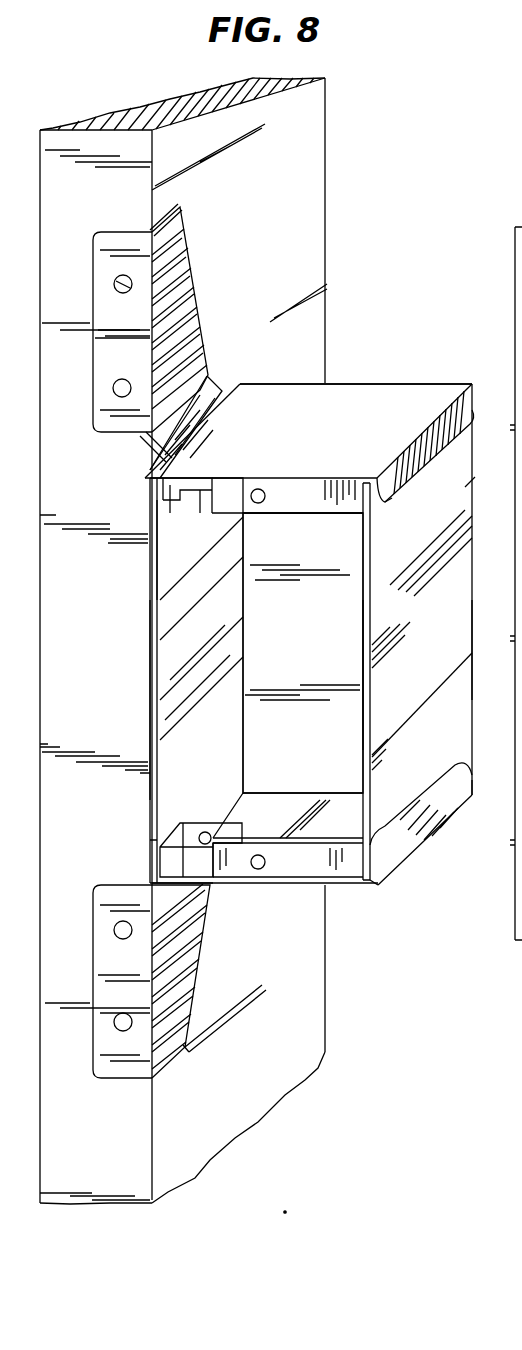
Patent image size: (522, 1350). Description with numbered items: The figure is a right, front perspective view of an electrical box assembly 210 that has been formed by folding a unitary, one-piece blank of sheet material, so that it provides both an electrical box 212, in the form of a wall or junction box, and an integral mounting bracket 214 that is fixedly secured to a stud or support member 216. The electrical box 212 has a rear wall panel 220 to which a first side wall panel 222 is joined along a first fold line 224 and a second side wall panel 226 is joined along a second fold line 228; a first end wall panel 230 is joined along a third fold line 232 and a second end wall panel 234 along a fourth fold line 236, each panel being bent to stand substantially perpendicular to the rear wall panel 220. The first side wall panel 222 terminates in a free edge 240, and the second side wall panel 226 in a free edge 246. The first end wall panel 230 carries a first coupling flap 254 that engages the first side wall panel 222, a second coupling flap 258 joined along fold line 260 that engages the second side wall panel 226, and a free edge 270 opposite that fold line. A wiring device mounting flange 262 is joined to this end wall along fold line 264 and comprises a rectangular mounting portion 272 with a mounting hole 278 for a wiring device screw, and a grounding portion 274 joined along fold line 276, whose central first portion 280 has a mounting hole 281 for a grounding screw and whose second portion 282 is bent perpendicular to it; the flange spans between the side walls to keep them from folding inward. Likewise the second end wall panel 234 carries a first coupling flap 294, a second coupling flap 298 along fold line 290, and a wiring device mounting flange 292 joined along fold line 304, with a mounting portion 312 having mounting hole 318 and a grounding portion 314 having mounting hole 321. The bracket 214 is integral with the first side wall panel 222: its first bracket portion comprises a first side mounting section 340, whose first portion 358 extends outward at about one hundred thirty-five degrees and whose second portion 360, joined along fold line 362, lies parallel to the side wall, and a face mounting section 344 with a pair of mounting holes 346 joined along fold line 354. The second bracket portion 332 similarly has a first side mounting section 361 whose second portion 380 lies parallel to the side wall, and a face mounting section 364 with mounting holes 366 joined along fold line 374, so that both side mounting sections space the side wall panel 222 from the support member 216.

The electrical box assembly 210 is at (392, 300).
The electrical box 212 is at (420, 372).
The mounting bracket 214 is at (250, 255).
The support member 216 is at (312, 1068).
The rear wall panel 220 is at (318, 692).
The first side wall panel 222 is at (146, 652).
The first fold line 224 is at (246, 658).
The second side wall panel 226 is at (355, 712).
The second fold line 228 is at (472, 632).
The first end wall panel 230 is at (320, 426).
The third fold line 232 is at (339, 384).
The second end wall panel 234 is at (297, 793).
The fourth fold line 236 is at (347, 793).
The free edge 240 is at (150, 615).
The free edge 246 is at (372, 600).
The first coupling flap 254 is at (150, 490).
The second coupling flap 258 is at (418, 485).
The fold line 260 is at (440, 400).
The wiring device mounting flange 262 is at (348, 495).
The fold line 264 is at (325, 478).
The free edge 270 is at (236, 386).
The mounting portion 272 is at (300, 520).
The grounding portion 274 is at (158, 545).
The fold line 276 is at (228, 498).
The mounting hole 278 is at (264, 490).
The first portion 280 is at (205, 495).
The mounting hole 281 is at (195, 495).
The second portion 282 is at (178, 485).
The fold line 290 is at (433, 833).
The wiring device mounting flange 292 is at (370, 892).
The first coupling flap 294 is at (150, 860).
The second coupling flap 298 is at (427, 793).
The fold line 304 is at (320, 883).
The mounting portion 312 is at (300, 833).
The grounding portion 314 is at (245, 818).
The mounting hole 318 is at (262, 870).
The mounting hole 321 is at (208, 833).
The second bracket portion 332 is at (190, 196).
The first side mounting section 340 is at (196, 248).
The face mounting section 344 is at (108, 232).
The mounting holes 346 is at (114, 283).
The fold line 354 is at (155, 337).
The first portion 358 is at (218, 375).
The second portion 360 is at (214, 342).
The first side mounting section 361 is at (190, 1060).
The fold line 362 is at (152, 452).
The face mounting section 364 is at (108, 1093).
The mounting holes 366 is at (115, 938).
The fold line 374 is at (155, 978).
The second portion 380 is at (208, 890).